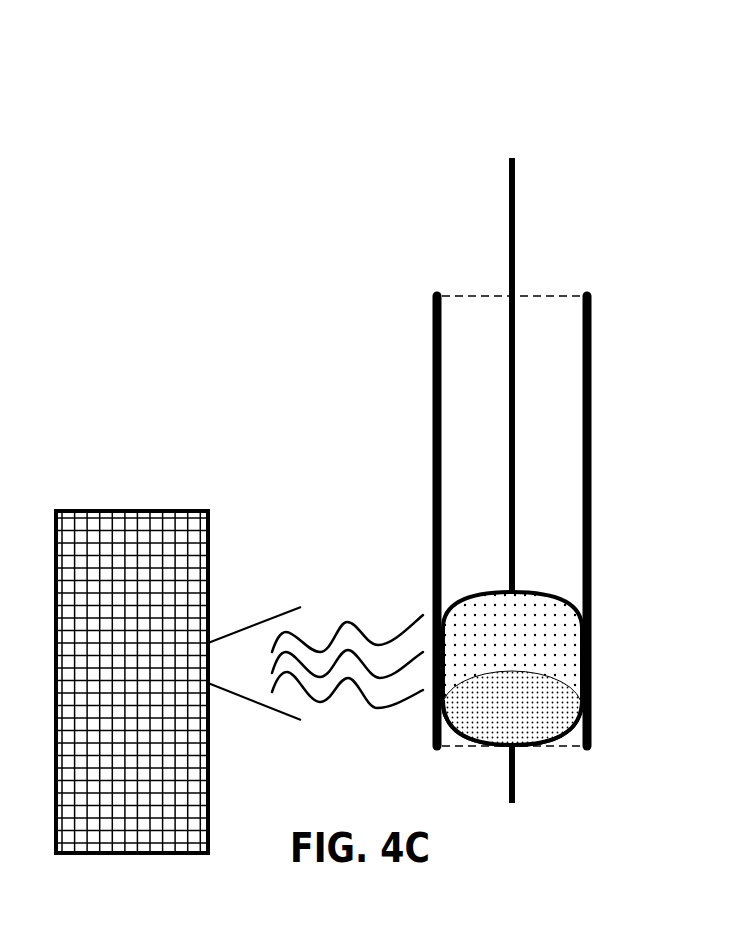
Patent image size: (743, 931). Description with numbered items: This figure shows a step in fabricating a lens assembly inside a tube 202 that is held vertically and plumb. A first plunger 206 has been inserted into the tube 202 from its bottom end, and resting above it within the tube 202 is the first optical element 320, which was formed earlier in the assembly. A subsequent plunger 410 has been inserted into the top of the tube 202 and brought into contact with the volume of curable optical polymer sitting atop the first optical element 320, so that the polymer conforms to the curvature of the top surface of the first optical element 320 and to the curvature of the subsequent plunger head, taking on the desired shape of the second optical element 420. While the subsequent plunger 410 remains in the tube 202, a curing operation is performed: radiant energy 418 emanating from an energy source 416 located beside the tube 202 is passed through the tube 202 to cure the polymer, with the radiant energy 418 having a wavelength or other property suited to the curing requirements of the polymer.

The subsequent plunger 410 is at (515, 200).
The tube 202 is at (592, 347).
The second optical element 420 is at (502, 643).
The first optical element 320 is at (525, 718).
The first plunger 206 is at (515, 757).
The energy source 416 is at (208, 557).
The radiant energy 418 is at (346, 717).